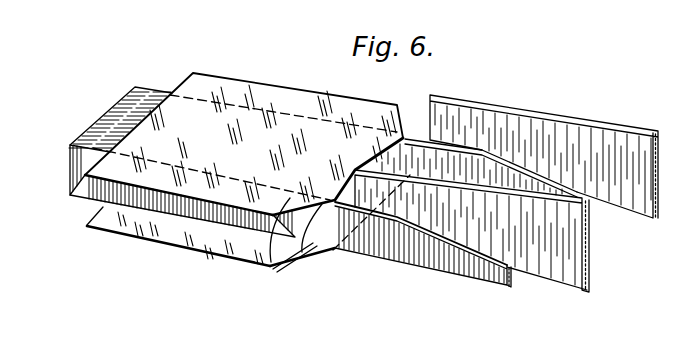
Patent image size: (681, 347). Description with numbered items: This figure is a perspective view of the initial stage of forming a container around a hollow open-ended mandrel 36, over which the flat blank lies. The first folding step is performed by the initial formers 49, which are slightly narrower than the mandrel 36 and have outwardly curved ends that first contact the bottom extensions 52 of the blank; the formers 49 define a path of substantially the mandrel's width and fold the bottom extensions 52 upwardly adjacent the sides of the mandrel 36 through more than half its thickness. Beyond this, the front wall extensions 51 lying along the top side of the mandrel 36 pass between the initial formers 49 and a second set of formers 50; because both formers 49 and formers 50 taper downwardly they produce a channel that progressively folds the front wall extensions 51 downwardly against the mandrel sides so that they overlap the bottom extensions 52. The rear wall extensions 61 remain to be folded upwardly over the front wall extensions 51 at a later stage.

The hollow open-ended mandrel 36 is at (116, 113).
The front wall extension 51 is at (218, 80).
The rear wall extension 61 is at (177, 238).
The bottom extension 52 is at (273, 263).
The initial former 49 is at (417, 138).
The second set of formers 50 is at (540, 117).